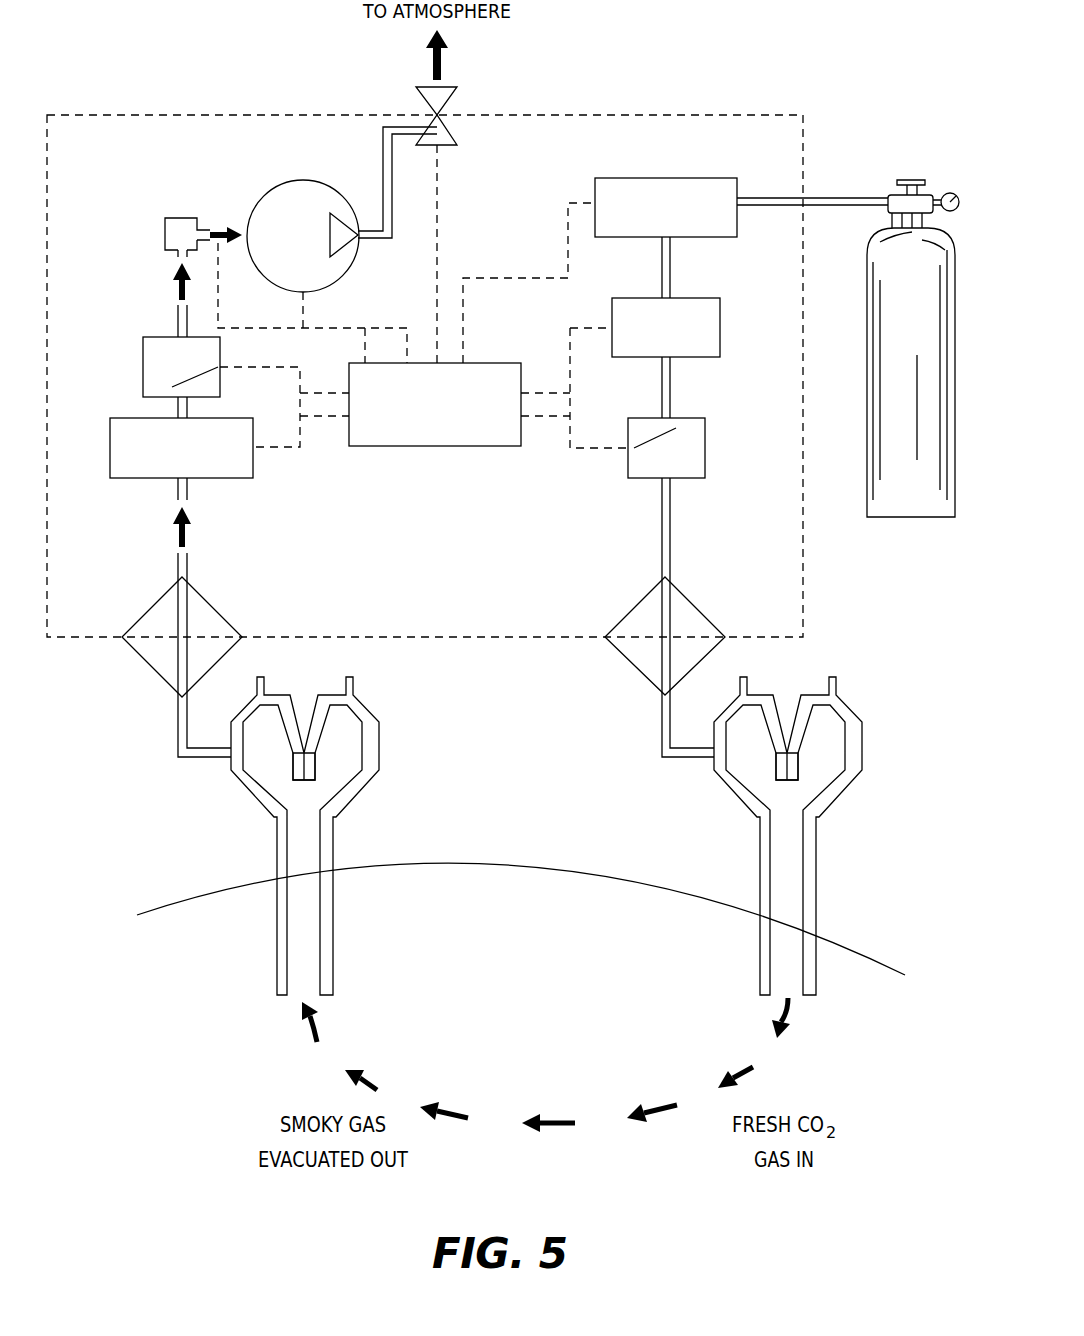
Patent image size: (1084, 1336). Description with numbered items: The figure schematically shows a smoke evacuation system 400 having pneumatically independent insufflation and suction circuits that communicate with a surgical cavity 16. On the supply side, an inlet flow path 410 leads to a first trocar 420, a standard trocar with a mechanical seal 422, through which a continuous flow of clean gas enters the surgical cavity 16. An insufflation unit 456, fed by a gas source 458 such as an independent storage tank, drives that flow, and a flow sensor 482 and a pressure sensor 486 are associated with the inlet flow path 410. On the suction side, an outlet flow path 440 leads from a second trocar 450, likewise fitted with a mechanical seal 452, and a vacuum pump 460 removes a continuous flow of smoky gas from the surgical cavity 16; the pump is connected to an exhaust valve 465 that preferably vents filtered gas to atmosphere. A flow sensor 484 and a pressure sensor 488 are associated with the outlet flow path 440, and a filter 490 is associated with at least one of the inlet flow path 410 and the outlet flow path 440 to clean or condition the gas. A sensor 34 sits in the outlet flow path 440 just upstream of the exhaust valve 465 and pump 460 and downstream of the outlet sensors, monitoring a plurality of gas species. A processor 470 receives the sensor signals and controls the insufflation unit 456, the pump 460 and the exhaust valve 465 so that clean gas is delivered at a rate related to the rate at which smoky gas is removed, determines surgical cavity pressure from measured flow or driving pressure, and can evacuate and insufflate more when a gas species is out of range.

The smoke evacuation system 400 is at (142, 72).
The sensor 34 is at (165, 232).
The vacuum pump 460 is at (287, 182).
The exhaust valve 465 is at (452, 97).
The insufflation unit 456 is at (690, 222).
The gas source 458 is at (937, 337).
The flow sensor 482 is at (690, 341).
The pressure sensor 486 is at (705, 443).
The processor 470 is at (459, 419).
The flow sensor 484 is at (206, 464).
The pressure sensor 488 is at (143, 370).
The filter 490 is at (203, 597).
The mechanical seal 452 is at (315, 763).
The mechanical seal 422 is at (798, 763).
The second trocar 450 is at (283, 867).
The first trocar 420 is at (815, 918).
The outlet flow path 440 is at (152, 728).
The inlet flow path 410 is at (608, 699).
The surgical cavity 16 is at (590, 912).